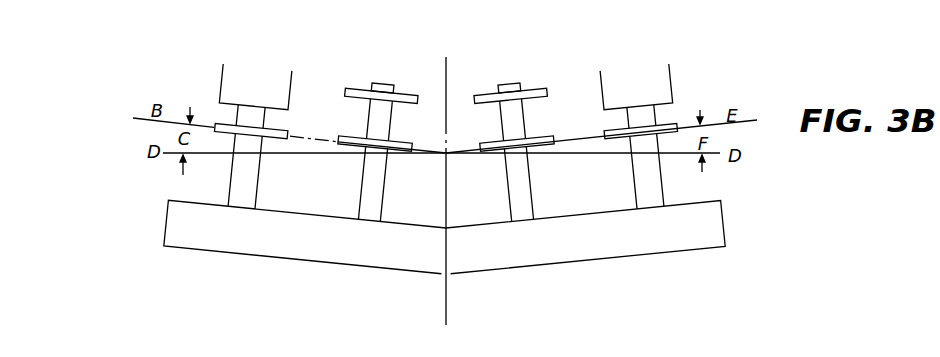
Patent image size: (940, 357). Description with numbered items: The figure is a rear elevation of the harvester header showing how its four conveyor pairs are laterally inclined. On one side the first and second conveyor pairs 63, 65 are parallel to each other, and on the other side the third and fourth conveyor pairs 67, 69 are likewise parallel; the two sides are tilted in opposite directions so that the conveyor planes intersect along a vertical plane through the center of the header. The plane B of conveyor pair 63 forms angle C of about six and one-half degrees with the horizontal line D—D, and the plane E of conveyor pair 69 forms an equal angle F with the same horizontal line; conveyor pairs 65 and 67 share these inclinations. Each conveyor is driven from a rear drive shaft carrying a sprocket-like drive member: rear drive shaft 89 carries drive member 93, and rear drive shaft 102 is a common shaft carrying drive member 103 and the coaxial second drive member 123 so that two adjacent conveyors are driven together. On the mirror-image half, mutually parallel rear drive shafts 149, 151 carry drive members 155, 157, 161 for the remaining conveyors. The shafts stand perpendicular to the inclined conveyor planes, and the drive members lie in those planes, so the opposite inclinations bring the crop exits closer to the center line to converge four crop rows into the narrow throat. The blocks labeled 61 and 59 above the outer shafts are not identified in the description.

The right housing block 59 is at (620, 85).
The left housing block 61 is at (245, 84).
The first conveyor pair 63 is at (313, 187).
The second conveyor pair 65 is at (317, 91).
The third conveyor pair 67 is at (572, 83).
The fourth conveyor pair 69 is at (586, 187).
The rear drive shaft 89 is at (661, 181).
The drive member 93 is at (674, 126).
The rear drive shaft 102 is at (509, 82).
The drive member 103 is at (542, 137).
The second drive member 123 is at (490, 104).
The rear drive shaft 149 is at (259, 171).
The rear drive shaft 151 is at (385, 82).
The drive member 155 is at (218, 123).
The drive member 157 is at (403, 144).
The drive member 161 is at (357, 96).